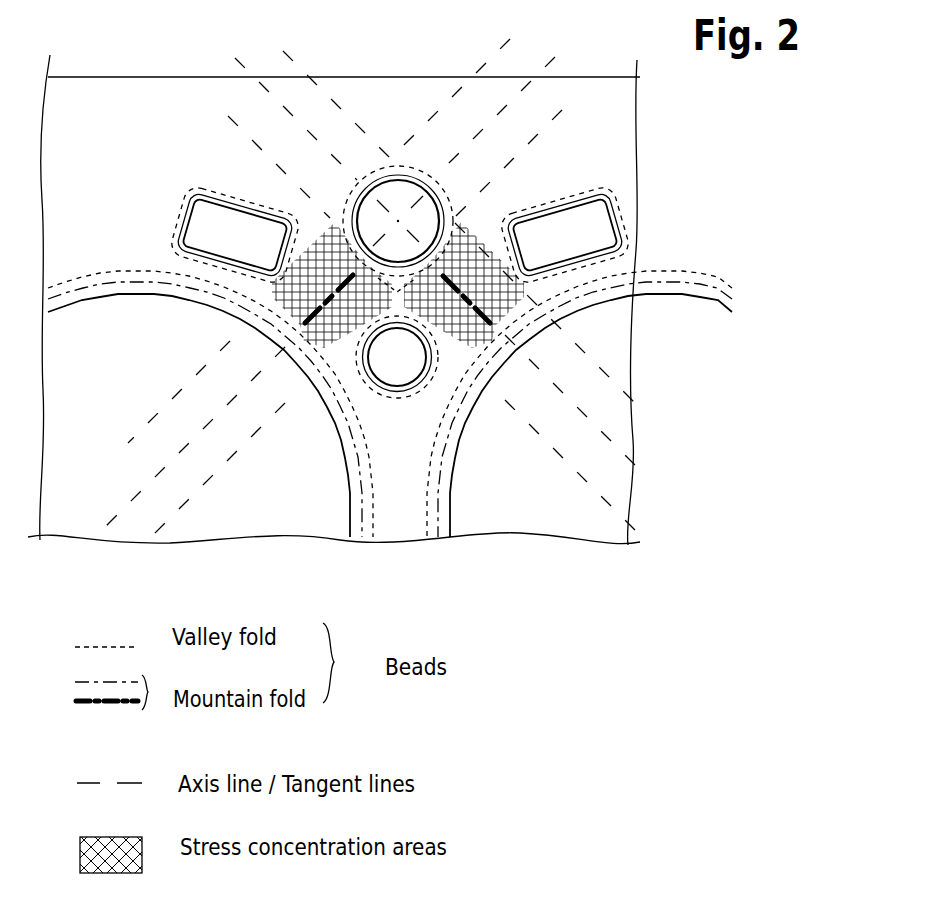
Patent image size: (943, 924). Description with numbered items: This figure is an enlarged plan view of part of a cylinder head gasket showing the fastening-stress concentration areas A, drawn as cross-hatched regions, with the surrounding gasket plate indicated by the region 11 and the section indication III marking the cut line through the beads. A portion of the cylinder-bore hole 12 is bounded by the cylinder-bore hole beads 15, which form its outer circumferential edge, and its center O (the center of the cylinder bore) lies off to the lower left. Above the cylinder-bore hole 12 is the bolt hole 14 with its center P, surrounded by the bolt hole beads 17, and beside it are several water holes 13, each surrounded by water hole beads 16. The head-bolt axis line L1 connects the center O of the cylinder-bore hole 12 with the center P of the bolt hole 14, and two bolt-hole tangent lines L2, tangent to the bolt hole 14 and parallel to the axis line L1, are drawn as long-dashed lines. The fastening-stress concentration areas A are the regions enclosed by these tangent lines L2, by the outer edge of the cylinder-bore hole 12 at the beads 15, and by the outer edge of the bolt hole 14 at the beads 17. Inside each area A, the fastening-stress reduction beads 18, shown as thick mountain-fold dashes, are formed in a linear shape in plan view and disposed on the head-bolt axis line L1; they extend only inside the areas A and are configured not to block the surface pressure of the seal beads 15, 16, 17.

The upper plate region 11 is at (130, 122).
The cylinder-bore hole 12 is at (68, 414).
The water hole 13 is at (220, 251).
The bolt hole 14 is at (383, 212).
The cylinder-bore hole beads 15 is at (166, 284).
The water hole beads 16 is at (186, 216).
The bolt hole beads 17 is at (446, 192).
The fastening-stress reduction beads 18 is at (316, 370).
The center of the bolt hole P is at (396, 225).
The fastening-stress concentration areas A is at (325, 242).
The section line III is at (432, 183).
The head-bolt axis line L1 is at (173, 470).
The bolt-hole tangent lines L2 is at (120, 460).
The center of the cylinder-bore hole O is at (147, 505).